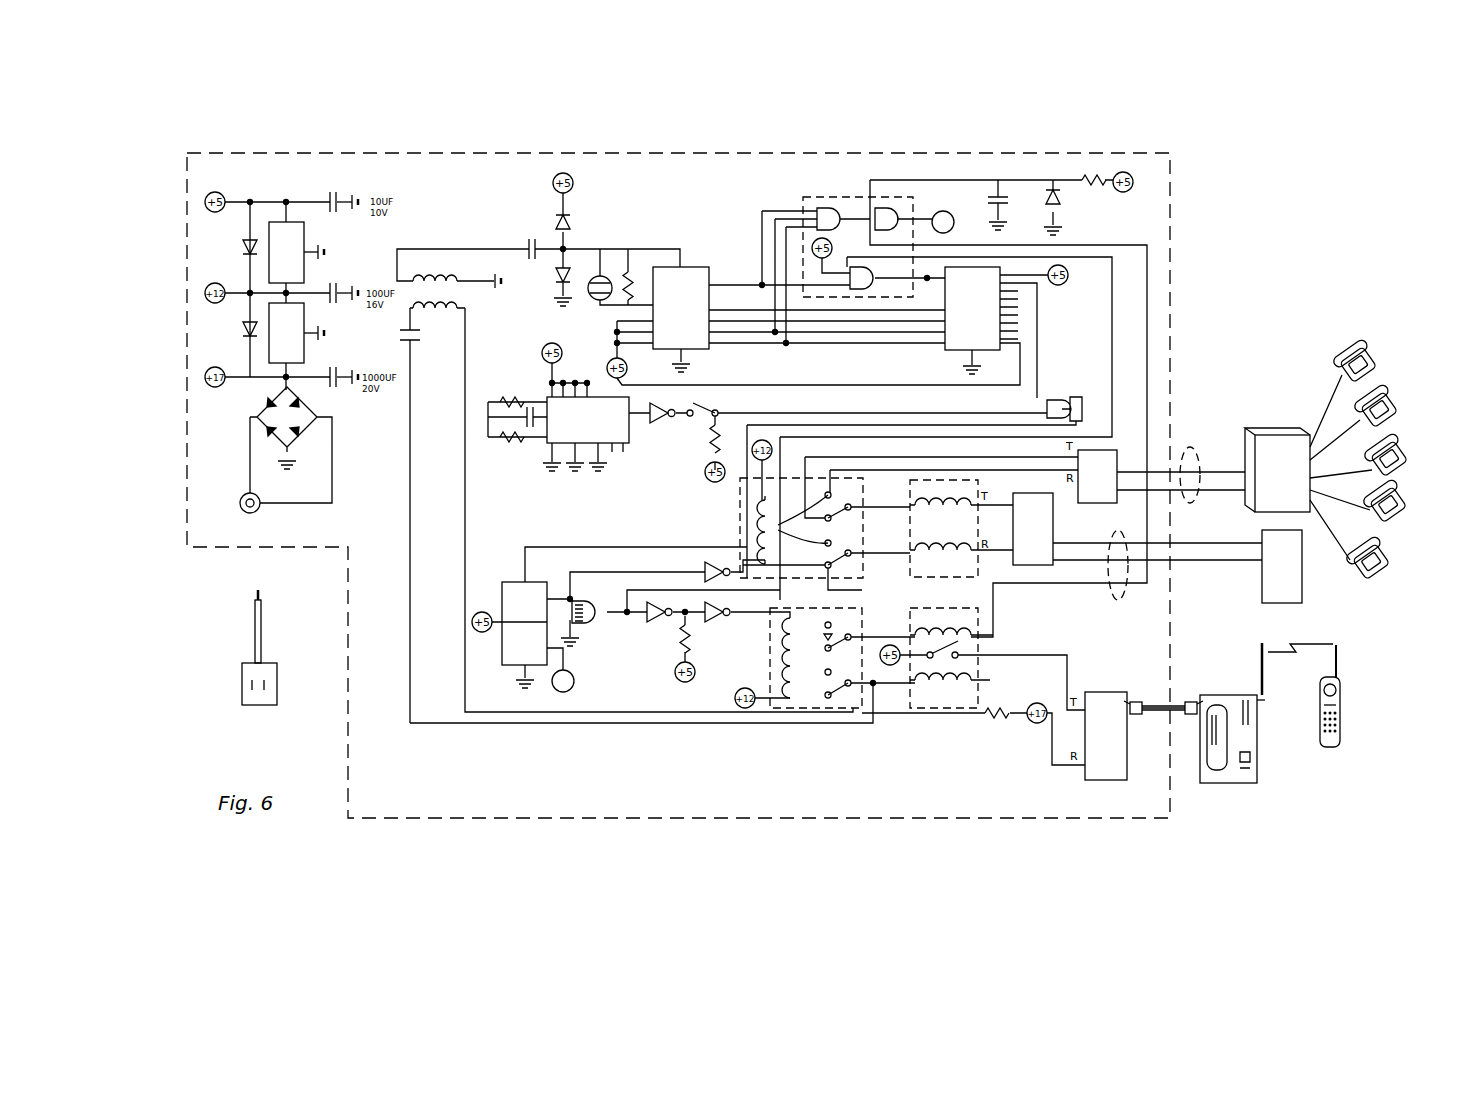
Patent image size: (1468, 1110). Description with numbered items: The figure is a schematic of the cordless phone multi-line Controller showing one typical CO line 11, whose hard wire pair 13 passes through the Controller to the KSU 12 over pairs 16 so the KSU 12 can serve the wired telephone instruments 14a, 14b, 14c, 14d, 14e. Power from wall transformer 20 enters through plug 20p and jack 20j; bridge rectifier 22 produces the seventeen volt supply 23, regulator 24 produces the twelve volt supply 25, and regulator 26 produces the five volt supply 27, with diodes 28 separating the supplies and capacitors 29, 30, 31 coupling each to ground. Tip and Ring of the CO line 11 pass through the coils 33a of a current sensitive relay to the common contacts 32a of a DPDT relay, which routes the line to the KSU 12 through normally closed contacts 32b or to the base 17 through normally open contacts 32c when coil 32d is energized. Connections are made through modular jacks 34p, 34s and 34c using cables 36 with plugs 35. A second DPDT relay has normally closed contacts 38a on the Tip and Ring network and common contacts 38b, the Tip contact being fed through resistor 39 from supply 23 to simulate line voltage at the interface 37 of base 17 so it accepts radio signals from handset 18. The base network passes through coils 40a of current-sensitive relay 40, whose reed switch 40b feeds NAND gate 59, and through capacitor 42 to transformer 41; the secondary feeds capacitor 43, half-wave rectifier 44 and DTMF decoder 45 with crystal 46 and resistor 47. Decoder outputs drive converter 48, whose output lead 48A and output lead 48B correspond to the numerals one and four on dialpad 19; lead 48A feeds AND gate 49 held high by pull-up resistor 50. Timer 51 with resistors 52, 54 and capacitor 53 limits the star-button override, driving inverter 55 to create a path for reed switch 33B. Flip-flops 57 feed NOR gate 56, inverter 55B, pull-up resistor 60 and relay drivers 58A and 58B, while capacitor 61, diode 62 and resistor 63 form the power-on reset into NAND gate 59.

The telephone CO line 11 is at (1280, 603).
The KSU 12 is at (1278, 428).
The hard wire pairs 13 is at (1120, 590).
The telephone instrument 14a is at (1350, 340).
The telephone instrument 14b is at (1382, 392).
The telephone instrument 14c is at (1393, 440).
The telephone instrument 14d is at (1398, 497).
The telephone instrument 14e is at (1388, 552).
The hard-wire pairs 16 is at (1190, 503).
The cordless phone base unit 17 is at (1230, 783).
The cordless phone handset 18 is at (1320, 740).
The dialpad 19 is at (1322, 710).
The wall transformer 20 is at (262, 706).
The power jack 20j is at (240, 510).
The plug 20p is at (255, 598).
The bridge rectifier 22 is at (258, 430).
The +17 VDC supply 23 is at (210, 368).
The 7812 voltage regulator 24 is at (298, 330).
The +12 VDC supply 25 is at (210, 285).
The 7805 voltage regulator 26 is at (298, 242).
The +5 VDC supply 27 is at (222, 193).
The 1N4148 diodes 28 is at (244, 246).
The 1000 ufd 20 volt capacitor 29 is at (335, 387).
The 100 ufd 16 volt capacitor 30 is at (335, 283).
The 10 ufd 10 volt capacitor 31 is at (335, 192).
The common contacts 32a is at (850, 548).
The normally closed contacts 32b is at (845, 503).
The normally open contacts 32c is at (747, 547).
The relay coil 32d is at (756, 505).
The coils 33a is at (945, 555).
The reed switch 33B is at (715, 403).
The RJ-11 modular jack (cordless phone) 34c is at (1108, 780).
The RJ-11 modular jack (parallel) 34p is at (1060, 520).
The RJ-11 modular jack (series) 34s is at (1110, 455).
The modular telephone plugs 35 is at (1138, 700).
The two-conductor cables 36 is at (1172, 714).
The RJ-11 telephone interface of base 37 is at (1205, 695).
The normally closed contacts 38a is at (850, 690).
The common contacts 38b is at (822, 690).
The 1K ohm resistor 39 is at (1002, 724).
The current-sensitive relay 40 is at (945, 712).
The coils 40a is at (960, 628).
The reed switch 40b is at (968, 650).
The 1:1, 600 ohm transformer 41 is at (430, 262).
The 0.33 ufd capacitor 42 is at (412, 343).
The 0.01 ufd capacitor 43 is at (530, 238).
The half-wave rectifier 44 is at (573, 225).
The DTMF decoder chip 45 is at (662, 268).
The 3.5967 MHz crystal 46 is at (602, 276).
The 1 megohm resistor 47 is at (630, 272).
The Binary-to-Hexadecimal converter chip 48 is at (948, 350).
The Y-1 output lead 48A is at (1020, 291).
The Y-4 output lead 48B is at (1020, 331).
The two-input AND gate 49 is at (1046, 402).
The 100K pull-up resistor 50 is at (710, 450).
The timer chip 51 is at (600, 405).
The 3.3K resistor 52 is at (513, 395).
The 0.01 ufd capacitor 53 is at (530, 405).
The 6.8K resistor 54 is at (518, 445).
The inverter chip circuit 55 is at (652, 420).
The inverter chip circuit 55B is at (660, 625).
The 8-input NOR gate chip 56 is at (595, 605).
The flip-flop chip 57 is at (518, 585).
The relay driver chip circuit 58A is at (700, 568).
The relay driver circuit 58B is at (716, 626).
The 3-input NAND gate 59 is at (805, 198).
The 100K pull-up resistor 60 is at (682, 655).
The 0.33 ufd capacitor 61 is at (990, 200).
The 1N4148 diode 62 is at (1060, 203).
The 47K resistor 63 is at (1098, 190).